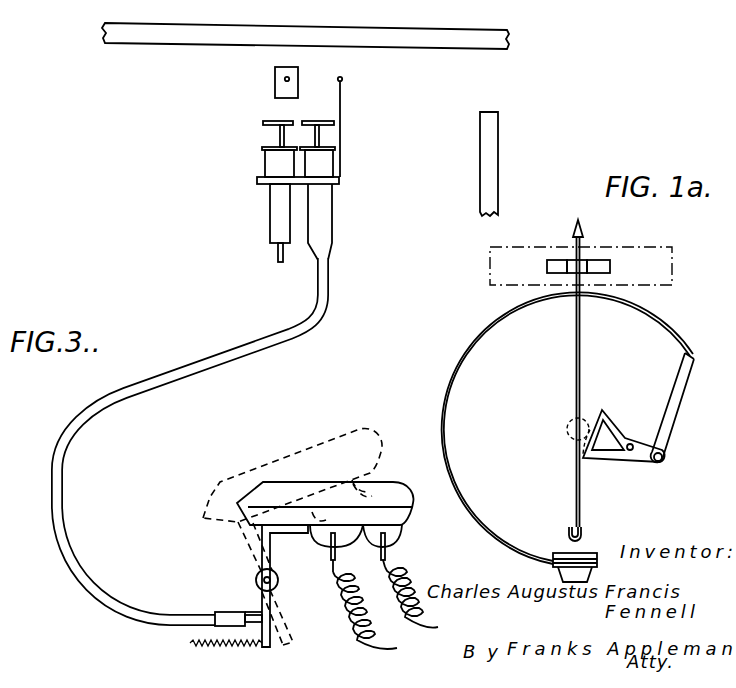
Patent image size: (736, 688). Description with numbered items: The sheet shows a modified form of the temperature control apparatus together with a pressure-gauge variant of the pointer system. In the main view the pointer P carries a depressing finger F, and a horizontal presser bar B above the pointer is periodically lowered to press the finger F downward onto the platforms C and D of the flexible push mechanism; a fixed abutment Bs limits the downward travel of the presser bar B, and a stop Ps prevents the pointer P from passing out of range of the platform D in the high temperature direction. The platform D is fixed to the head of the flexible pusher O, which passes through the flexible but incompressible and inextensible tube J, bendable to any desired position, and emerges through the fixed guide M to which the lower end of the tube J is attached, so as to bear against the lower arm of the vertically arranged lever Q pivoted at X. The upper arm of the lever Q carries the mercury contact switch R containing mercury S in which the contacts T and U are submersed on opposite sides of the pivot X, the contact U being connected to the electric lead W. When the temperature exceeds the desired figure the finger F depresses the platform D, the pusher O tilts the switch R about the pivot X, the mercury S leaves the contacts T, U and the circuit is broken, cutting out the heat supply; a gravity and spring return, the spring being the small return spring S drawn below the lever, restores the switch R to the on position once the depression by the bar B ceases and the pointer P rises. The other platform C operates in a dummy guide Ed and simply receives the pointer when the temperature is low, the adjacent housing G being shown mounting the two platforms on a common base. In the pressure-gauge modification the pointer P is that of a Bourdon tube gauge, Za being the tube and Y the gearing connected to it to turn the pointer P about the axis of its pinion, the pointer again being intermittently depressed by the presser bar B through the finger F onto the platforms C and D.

In FIG. 3, the presser bar B is at (306, 40).
In FIG. 1A, the presser bar B is at (657, 268).
In FIG. 3, the fixed abutment Bs is at (512, 156).
In FIG. 3, the pointer P is at (284, 78).
In FIG. 1A, the pointer P is at (581, 229).
In FIG. 3, the finger F is at (275, 92).
In FIG. 1A, the finger F is at (575, 267).
In FIG. 3, the stop Ps is at (343, 93).
In FIG. 3, the platform C is at (283, 118).
In FIG. 1A, the platform C is at (550, 268).
In FIG. 3, the platform D is at (318, 118).
In FIG. 1A, the platform D is at (607, 272).
In FIG. 3, the coil / base G is at (318, 163).
In FIG. 3, the dummy guide Ed is at (285, 223).
In FIG. 3, the flexible tube J is at (202, 368).
In FIG. 3, the fixed guide M is at (224, 613).
In FIG. 3, the flexible pusher O is at (250, 612).
In FIG. 3, the lever Q is at (272, 637).
In FIG. 3, the pivot X is at (279, 578).
In FIG. 3, the mercury / return spring S is at (197, 646).
In FIG. 3, the mercury contact switch R is at (392, 490).
In FIG. 3, the contact T is at (337, 549).
In FIG. 3, the contact U is at (386, 548).
In FIG. 3, the gearing Y is at (379, 611).
In FIG. 1A, the gearing Y is at (618, 428).
In FIG. 3, the electric lead W is at (430, 598).
In FIG. 1A, the Bourdon tube Za is at (468, 513).